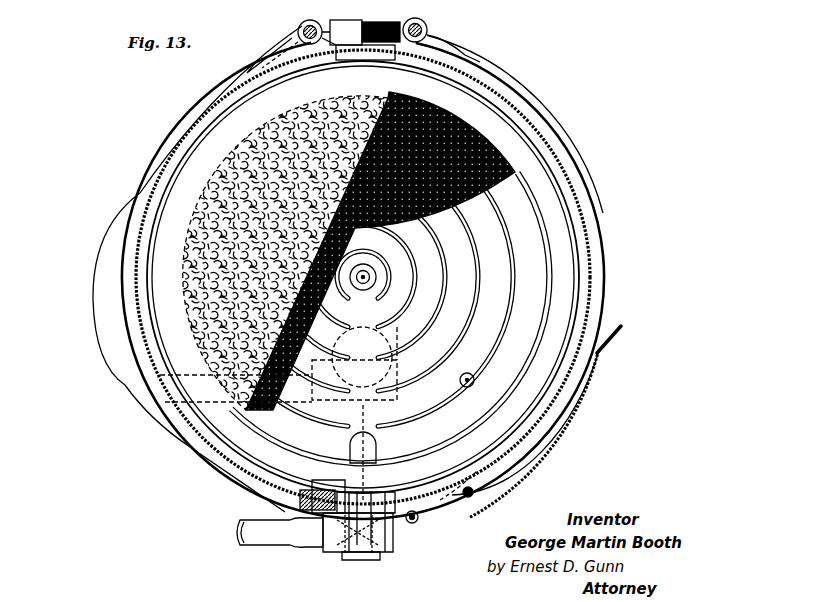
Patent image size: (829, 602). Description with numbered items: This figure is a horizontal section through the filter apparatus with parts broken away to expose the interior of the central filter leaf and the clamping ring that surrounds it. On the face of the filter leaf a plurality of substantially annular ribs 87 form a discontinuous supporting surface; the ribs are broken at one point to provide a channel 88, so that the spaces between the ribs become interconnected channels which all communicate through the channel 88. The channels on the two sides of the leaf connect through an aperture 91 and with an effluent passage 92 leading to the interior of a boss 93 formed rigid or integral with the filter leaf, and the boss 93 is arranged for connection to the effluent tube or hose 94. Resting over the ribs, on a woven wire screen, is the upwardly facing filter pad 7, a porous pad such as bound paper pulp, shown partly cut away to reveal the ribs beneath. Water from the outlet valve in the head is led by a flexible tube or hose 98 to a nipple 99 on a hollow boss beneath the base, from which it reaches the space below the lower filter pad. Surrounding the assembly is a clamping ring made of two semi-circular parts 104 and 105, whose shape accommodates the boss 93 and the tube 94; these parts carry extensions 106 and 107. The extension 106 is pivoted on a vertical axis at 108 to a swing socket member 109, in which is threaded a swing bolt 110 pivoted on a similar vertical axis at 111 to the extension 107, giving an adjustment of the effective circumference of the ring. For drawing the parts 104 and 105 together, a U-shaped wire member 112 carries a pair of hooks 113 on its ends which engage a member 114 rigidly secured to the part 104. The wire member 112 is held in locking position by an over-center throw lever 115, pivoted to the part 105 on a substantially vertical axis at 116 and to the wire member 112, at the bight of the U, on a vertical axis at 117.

The filter pad 7 is at (233, 197).
The annular ribs 87 is at (380, 303).
The channel 88 is at (385, 395).
The aperture 91 is at (372, 443).
The effluent passage 92 is at (372, 468).
The boss 93 is at (372, 552).
The effluent tube or hose 94 is at (260, 522).
The flexible tube or hose 98 is at (113, 338).
The nipple 99 is at (321, 432).
The semi-circular part 104 is at (207, 121).
The semi-circular part 105 is at (540, 128).
The extension 106 is at (300, 24).
The extension 107 is at (468, 48).
The pivot 108 is at (292, 40).
The swing socket member 109 is at (342, 22).
The swing bolt 110 is at (392, 10).
The pivot 111 is at (430, 27).
The U-shaped wire member 112 is at (470, 500).
The hooks 113 is at (321, 488).
The member 114 is at (300, 503).
The lever 115 is at (583, 425).
The pivot 116 is at (414, 524).
The pivot 117 is at (530, 482).